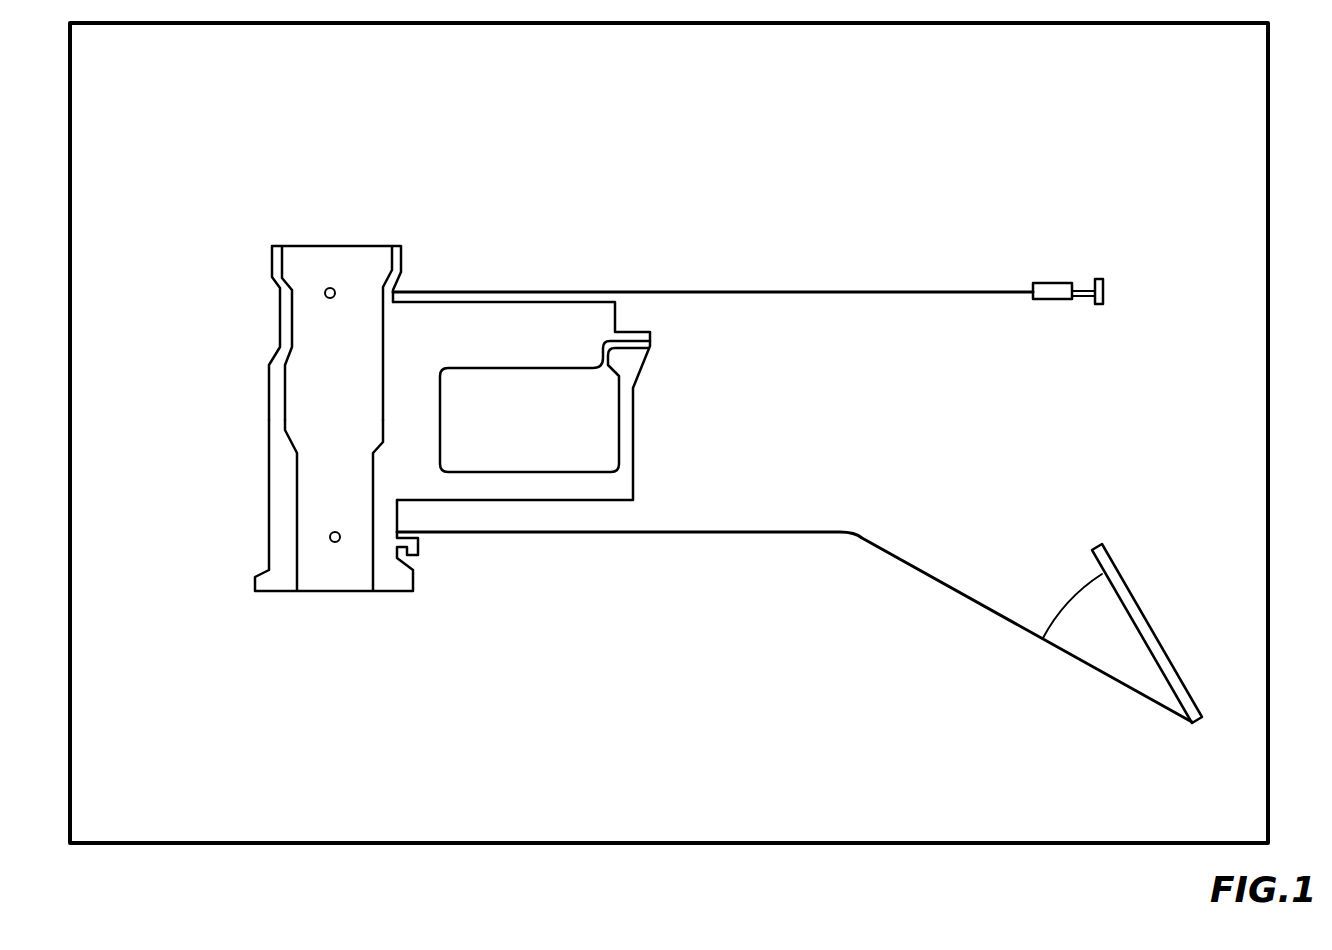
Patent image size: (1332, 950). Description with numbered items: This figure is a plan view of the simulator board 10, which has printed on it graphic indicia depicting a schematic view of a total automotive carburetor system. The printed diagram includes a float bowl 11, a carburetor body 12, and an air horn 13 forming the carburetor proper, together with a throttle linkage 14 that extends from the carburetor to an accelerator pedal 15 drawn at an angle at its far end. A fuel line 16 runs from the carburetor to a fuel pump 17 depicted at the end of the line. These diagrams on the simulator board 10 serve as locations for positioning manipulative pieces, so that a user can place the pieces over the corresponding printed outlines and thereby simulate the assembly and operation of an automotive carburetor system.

The simulator board 10 is at (720, 850).
The float bowl 11 is at (601, 424).
The carburetor body 12 is at (279, 552).
The air horn 13 is at (300, 306).
The throttle linkage 14 is at (777, 531).
The accelerator pedal 15 is at (1135, 605).
The fuel line 16 is at (850, 292).
The fuel pump 17 is at (1046, 283).